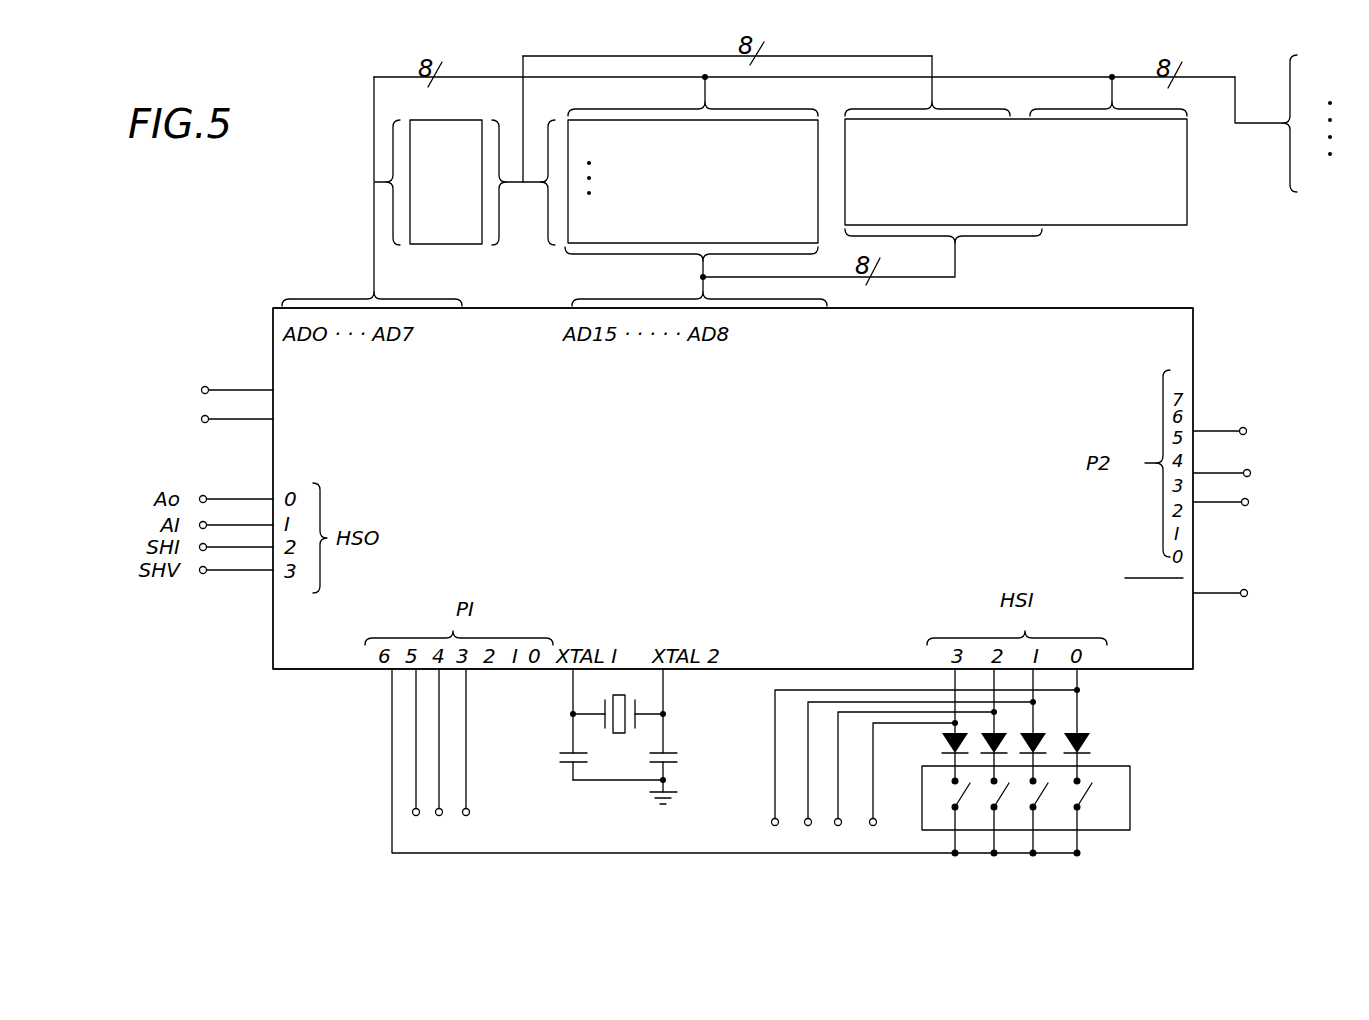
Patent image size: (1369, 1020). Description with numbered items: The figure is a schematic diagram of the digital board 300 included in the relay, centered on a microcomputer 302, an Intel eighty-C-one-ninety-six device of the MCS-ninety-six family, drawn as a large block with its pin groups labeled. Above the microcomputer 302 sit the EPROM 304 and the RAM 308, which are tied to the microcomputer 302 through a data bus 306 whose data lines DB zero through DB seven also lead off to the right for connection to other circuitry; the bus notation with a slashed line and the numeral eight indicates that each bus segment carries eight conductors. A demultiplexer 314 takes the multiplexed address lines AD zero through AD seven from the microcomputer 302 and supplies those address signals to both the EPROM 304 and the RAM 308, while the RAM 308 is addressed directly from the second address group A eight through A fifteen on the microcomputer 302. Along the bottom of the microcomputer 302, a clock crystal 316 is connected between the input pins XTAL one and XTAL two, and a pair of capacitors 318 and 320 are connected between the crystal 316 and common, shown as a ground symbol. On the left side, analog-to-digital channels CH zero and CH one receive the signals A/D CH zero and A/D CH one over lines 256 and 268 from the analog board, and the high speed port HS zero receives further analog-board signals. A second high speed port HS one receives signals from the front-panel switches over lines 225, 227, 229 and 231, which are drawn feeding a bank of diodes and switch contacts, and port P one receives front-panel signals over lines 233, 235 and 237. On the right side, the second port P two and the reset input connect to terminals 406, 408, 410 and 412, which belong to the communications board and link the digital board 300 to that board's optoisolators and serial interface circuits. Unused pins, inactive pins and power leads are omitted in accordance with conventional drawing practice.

The digital board 300 is at (260, 318).
The microcomputer 302 is at (1135, 308).
The EPROM 304 is at (568, 243).
The data bus 306 is at (1205, 77).
The RAM 308 is at (1187, 205).
The demultiplexer 314 is at (432, 244).
The clock crystal 316 is at (613, 734).
The capacitor 318 is at (567, 765).
The capacitor 320 is at (668, 755).
The line 256 is at (248, 388).
The line 268 is at (242, 421).
The terminal 406 is at (1256, 412).
The terminal 408 is at (1250, 472).
The terminal 410 is at (1248, 503).
The terminal 412 is at (1247, 594).
The line 225 is at (871, 825).
The line 227 is at (836, 825).
The line 229 is at (806, 825).
The line 231 is at (772, 824).
The line 233 is at (469, 813).
The line 235 is at (439, 816).
The line 237 is at (413, 815).